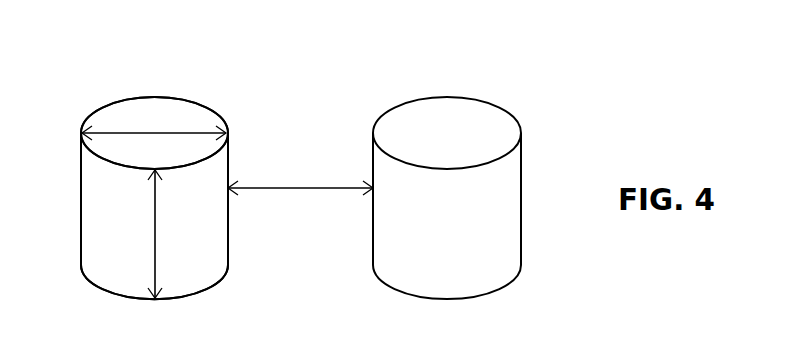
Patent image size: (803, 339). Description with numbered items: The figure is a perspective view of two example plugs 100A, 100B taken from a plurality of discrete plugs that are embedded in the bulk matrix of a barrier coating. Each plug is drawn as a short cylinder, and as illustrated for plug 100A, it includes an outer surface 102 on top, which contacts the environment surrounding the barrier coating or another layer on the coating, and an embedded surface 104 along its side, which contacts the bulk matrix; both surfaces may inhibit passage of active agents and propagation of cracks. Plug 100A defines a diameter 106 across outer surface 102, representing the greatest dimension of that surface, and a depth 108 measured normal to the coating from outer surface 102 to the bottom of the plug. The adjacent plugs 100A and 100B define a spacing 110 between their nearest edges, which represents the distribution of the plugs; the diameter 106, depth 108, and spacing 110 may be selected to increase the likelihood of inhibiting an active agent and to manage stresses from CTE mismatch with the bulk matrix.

The plug 100A is at (190, 62).
The plug 100B is at (475, 62).
The outer surface 102 is at (153, 113).
The embedded surface 104 is at (92, 215).
The diameter 106 is at (212, 131).
The depth 108 is at (157, 252).
The spacing 110 is at (265, 187).